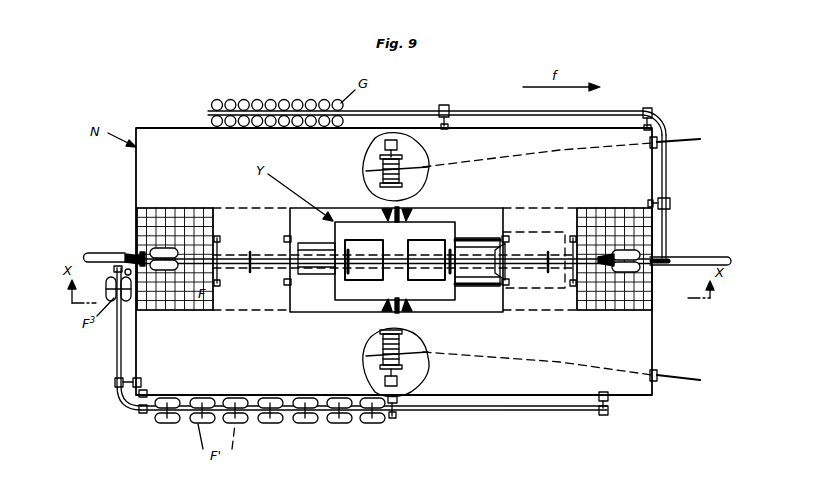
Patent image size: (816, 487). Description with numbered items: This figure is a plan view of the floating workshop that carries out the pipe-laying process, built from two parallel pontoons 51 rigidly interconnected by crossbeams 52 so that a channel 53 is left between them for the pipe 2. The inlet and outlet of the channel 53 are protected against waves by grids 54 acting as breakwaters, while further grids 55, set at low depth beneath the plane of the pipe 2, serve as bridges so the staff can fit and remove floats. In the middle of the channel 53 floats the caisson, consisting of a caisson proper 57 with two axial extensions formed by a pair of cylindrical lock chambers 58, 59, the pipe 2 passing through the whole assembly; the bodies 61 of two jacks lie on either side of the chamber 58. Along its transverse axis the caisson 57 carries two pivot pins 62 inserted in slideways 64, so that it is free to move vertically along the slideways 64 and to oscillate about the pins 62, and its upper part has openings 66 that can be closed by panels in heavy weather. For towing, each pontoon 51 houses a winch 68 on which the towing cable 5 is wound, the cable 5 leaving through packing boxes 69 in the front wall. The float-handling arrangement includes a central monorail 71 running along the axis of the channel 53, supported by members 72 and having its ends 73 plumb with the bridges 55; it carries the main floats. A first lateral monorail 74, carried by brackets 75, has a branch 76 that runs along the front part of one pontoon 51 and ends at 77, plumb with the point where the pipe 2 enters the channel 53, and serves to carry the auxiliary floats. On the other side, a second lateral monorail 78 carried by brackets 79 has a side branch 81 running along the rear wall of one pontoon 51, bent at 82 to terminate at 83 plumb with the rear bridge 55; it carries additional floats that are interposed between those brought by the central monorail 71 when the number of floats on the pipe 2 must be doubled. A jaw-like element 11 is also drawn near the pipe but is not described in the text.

The pipe 2 is at (95, 266).
The towing cable 5 is at (694, 141).
The clamping jaw 11 is at (156, 268).
The pontoon 51 is at (634, 168).
The crossbeam 52 is at (255, 308).
The channel 53 is at (188, 222).
The grid 54 is at (137, 215).
The grid 55 is at (206, 224).
The caisson proper 57 is at (448, 298).
The cylindrical lock chamber 58 is at (481, 273).
The cylindrical lock chamber 59 is at (306, 276).
The jack body 61 is at (507, 228).
The pivot pin 62 is at (401, 211).
The slideway 64 is at (381, 211).
The opening 66 is at (366, 278).
The winch 68 is at (386, 166).
The packing box 69 is at (660, 137).
The monorail 71 is at (225, 266).
The supporting member 72 is at (283, 266).
The monorail end 73 is at (200, 259).
The first lateral monorail 74 is at (402, 111).
The bracket 75 is at (451, 109).
The branch 76 is at (670, 185).
The branch end 77 is at (667, 261).
The second lateral monorail 78 is at (498, 412).
The bracket 79 is at (392, 418).
The side branch 81 is at (118, 355).
The bend 82 is at (127, 255).
The branch end 83 is at (146, 257).